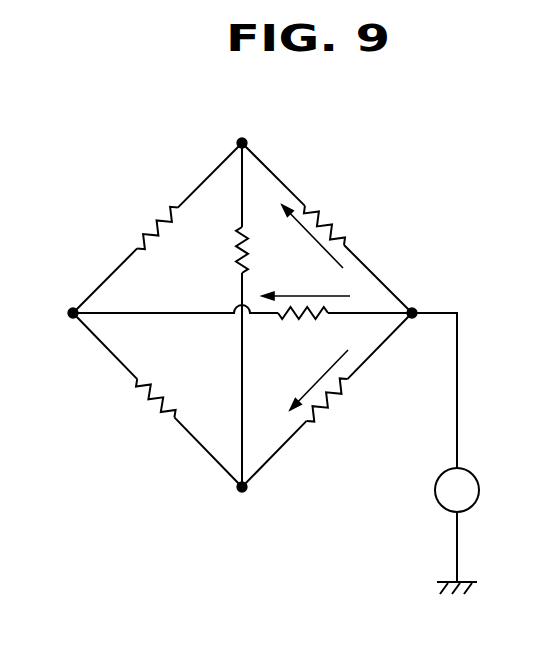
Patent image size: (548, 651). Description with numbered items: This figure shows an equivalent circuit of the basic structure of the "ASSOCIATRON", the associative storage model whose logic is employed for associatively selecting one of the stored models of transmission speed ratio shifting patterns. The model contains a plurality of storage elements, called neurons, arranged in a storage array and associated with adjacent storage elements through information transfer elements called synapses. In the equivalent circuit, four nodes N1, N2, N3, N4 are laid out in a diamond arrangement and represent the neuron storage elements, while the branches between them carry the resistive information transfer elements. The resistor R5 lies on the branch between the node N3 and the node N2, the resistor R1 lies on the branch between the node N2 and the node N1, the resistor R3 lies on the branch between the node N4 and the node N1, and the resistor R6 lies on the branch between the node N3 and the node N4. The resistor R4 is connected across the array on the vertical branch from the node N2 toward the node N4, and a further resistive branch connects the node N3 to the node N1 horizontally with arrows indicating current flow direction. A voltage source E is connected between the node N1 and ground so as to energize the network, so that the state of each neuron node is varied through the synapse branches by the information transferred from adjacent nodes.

The resistor R1 is at (330, 223).
The resistor R3 is at (336, 404).
The resistor R4 is at (222, 250).
The resistor R5 is at (151, 223).
The resistor R6 is at (137, 401).
The node N1 is at (422, 302).
The node N2 is at (244, 131).
The node N3 is at (53, 306).
The node N4 is at (245, 504).
The voltage source E is at (457, 490).